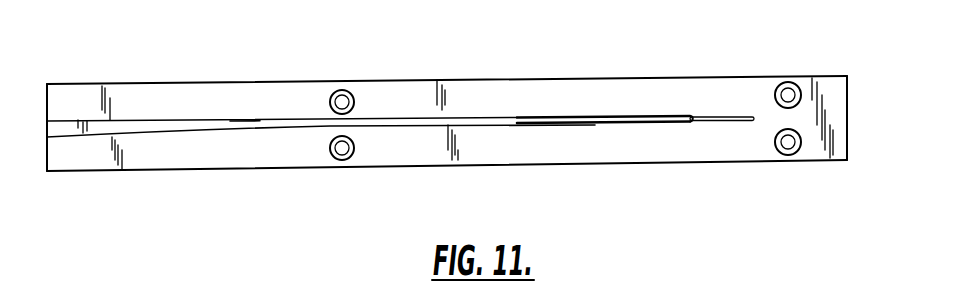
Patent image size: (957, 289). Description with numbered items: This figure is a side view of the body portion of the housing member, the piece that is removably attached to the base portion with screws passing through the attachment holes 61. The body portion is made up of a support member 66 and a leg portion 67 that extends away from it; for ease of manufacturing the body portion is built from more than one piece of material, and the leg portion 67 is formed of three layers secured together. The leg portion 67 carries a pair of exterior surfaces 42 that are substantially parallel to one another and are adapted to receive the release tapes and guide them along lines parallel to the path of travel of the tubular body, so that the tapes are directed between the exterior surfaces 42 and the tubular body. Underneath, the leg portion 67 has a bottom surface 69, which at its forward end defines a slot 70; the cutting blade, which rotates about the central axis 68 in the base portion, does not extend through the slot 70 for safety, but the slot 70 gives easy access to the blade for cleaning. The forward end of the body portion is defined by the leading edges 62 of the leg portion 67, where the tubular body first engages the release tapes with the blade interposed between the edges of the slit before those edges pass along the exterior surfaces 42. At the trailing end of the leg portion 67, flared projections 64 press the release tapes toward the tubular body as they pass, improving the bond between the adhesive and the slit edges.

The exterior surfaces 42 is at (290, 128).
The attachment holes 61 is at (344, 100).
The leading edges 62 is at (717, 116).
The projections 64 is at (100, 128).
The support member 66 is at (178, 98).
The leg portion 67 is at (241, 114).
The central axis 68 is at (568, 116).
The bottom surface 69 is at (481, 121).
The slot 70 is at (655, 114).